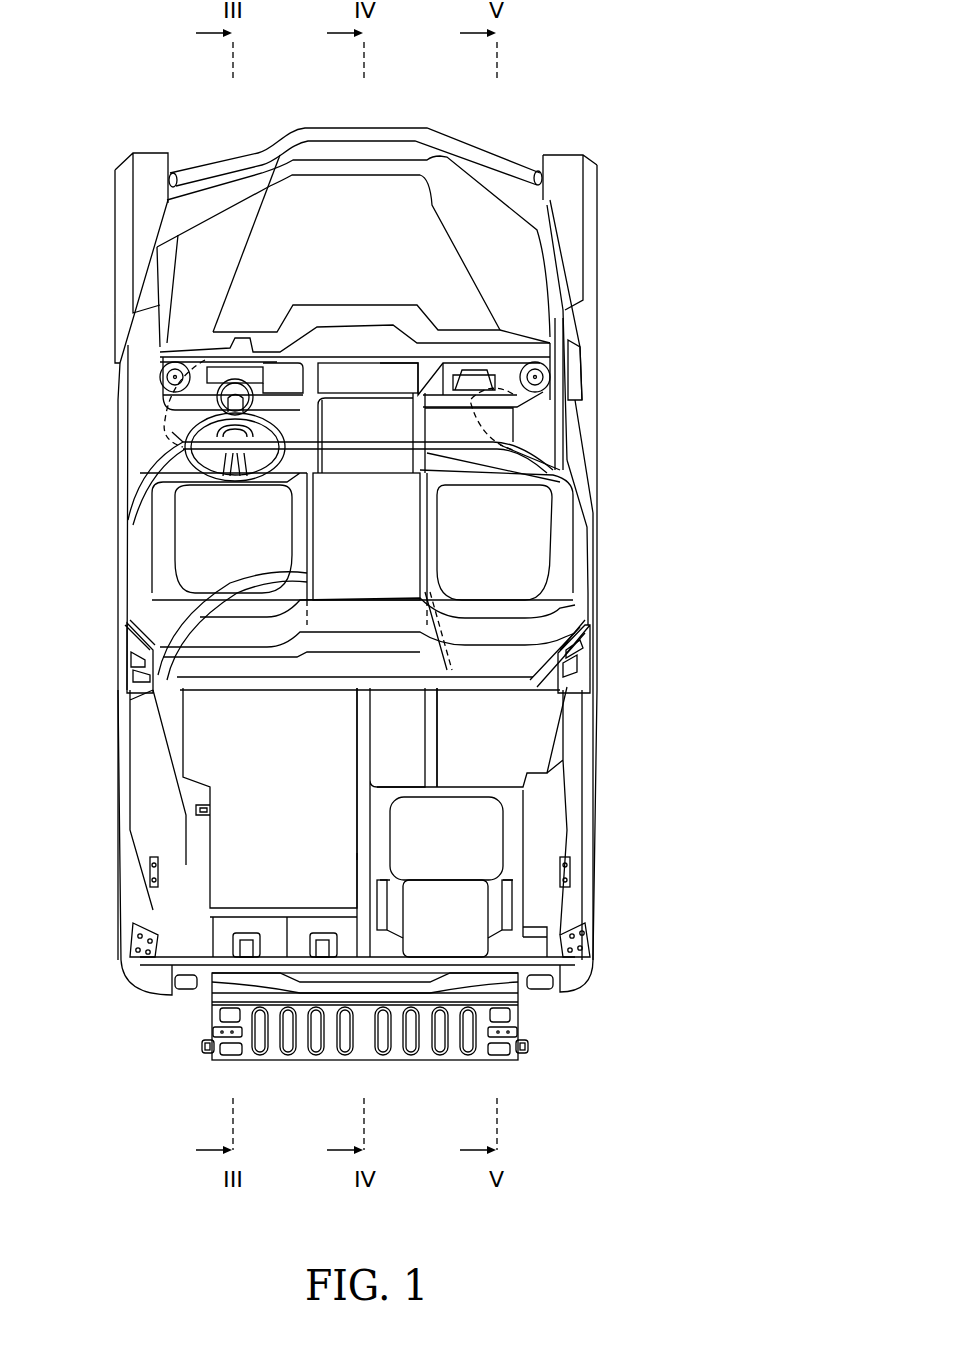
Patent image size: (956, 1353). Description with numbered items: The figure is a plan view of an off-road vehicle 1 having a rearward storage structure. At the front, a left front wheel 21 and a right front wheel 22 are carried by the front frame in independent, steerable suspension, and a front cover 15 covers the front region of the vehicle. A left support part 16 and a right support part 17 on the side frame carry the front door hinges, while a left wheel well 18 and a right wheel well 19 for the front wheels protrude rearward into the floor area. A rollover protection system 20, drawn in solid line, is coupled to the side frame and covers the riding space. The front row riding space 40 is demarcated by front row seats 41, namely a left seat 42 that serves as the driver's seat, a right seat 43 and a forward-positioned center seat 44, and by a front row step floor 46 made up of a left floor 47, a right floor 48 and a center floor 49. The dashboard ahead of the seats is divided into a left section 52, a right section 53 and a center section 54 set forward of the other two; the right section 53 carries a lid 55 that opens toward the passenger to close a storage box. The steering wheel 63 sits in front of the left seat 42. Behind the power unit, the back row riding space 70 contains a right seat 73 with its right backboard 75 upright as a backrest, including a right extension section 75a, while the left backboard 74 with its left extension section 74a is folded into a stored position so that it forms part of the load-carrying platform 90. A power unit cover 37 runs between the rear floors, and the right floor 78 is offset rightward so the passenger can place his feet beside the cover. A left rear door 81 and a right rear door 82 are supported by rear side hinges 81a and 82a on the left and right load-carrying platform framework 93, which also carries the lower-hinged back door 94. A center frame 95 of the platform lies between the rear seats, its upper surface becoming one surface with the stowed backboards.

The off-road vehicle 1 is at (572, 94).
The front cover 15 is at (527, 268).
The left support part 16 is at (150, 392).
The right support part 17 is at (592, 365).
The left wheel well 18 is at (200, 404).
The right wheel well 19 is at (513, 394).
The rollover protection system 20 is at (596, 637).
The left front wheel 21 is at (128, 184).
The right front wheel 22 is at (588, 174).
The power unit cover 37 is at (410, 725).
The front row riding space 40 is at (596, 519).
The front row seats 41 is at (357, 580).
The left seat 42 is at (280, 539).
The right seat 43 is at (537, 539).
The center seat 44 is at (410, 539).
The front row step floor 46 is at (340, 425).
The left floor 47 is at (172, 432).
The right floor 48 is at (513, 435).
The center floor 49 is at (407, 435).
The left section 52 is at (277, 377).
The right section 53 is at (448, 370).
The center section 54 is at (330, 358).
The lid 55 is at (483, 367).
The steering wheel 63 is at (167, 463).
The back row riding space 70 is at (596, 790).
The right seat 73 is at (482, 844).
The left backboard 74 is at (292, 800).
The left extension section 74a is at (197, 745).
The right backboard 75 is at (457, 925).
The right extension section 75a is at (518, 950).
The right floor 78 is at (518, 725).
The left rear door 81 is at (153, 787).
The rear side hinge 81a is at (155, 870).
The right rear door 82 is at (573, 763).
The rear side hinge 82a is at (570, 873).
The load-carrying platform 90 is at (537, 988).
The load-carrying platform framework 93 is at (177, 927).
The back door 94 is at (367, 1042).
The center frame 95 is at (357, 853).